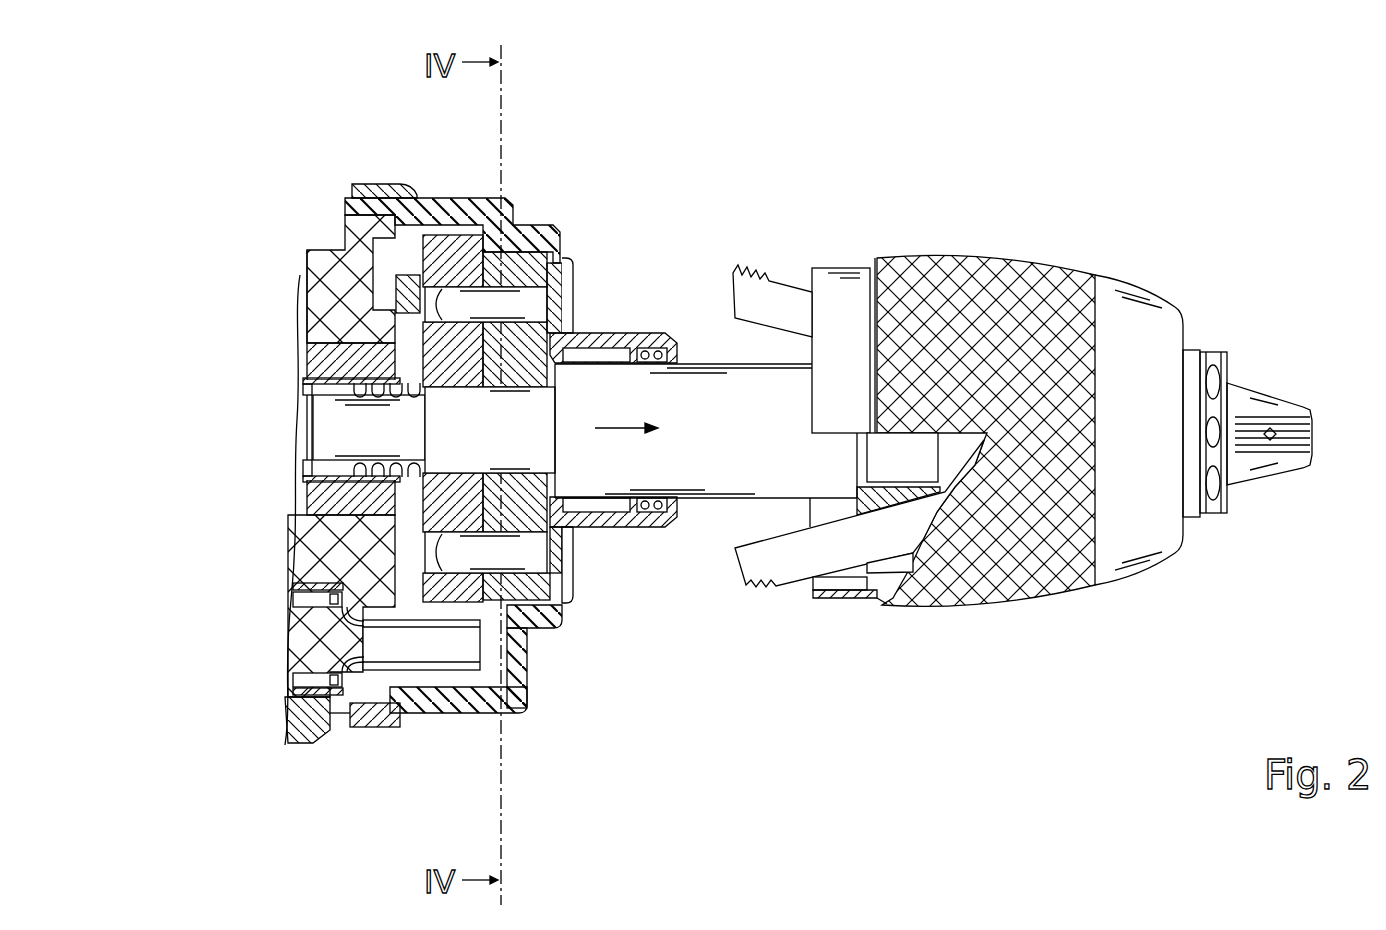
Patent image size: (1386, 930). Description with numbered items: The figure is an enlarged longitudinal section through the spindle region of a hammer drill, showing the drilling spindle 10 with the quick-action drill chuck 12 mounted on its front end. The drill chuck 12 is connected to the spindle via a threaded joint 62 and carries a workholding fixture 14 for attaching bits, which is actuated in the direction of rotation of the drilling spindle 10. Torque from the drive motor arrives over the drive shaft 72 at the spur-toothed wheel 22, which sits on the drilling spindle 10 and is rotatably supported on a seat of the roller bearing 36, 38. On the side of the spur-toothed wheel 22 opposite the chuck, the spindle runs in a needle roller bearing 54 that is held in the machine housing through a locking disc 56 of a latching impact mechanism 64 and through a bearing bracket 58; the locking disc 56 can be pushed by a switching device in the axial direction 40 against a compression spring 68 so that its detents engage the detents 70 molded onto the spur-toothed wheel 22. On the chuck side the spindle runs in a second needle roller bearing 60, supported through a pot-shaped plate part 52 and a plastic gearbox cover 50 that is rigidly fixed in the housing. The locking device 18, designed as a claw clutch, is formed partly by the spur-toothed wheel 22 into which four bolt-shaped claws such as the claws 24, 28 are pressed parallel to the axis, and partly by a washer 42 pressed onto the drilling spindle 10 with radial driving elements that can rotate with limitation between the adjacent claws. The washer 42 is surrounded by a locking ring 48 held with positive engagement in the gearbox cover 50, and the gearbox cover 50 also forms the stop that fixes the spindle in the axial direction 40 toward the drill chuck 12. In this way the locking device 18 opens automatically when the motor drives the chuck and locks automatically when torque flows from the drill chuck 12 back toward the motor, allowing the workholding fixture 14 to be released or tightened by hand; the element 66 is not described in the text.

The drilling spindle 10 is at (737, 425).
The quick-action drill chuck 12 is at (1000, 243).
The workholding fixture 14 is at (1255, 380).
The locking device 18 is at (488, 232).
The spur-toothed wheel 22 is at (453, 593).
The claw 24 is at (352, 188).
The claw 28 is at (528, 612).
The seat of the roller bearing 36 is at (567, 287).
The seat of the roller bearing 38 is at (562, 600).
The axial direction 40 is at (632, 432).
The washer 42 is at (578, 565).
The locking ring 48 is at (520, 267).
The gearbox cover 50 is at (420, 637).
The pot-shaped plate part 52 is at (640, 343).
The needle roller bearing 54 is at (333, 472).
The locking disc 56 is at (335, 497).
The bearing bracket 58 is at (332, 275).
The needle roller bearing 60 is at (607, 348).
The threaded joint 62 is at (985, 603).
The latching impact mechanism 64 is at (293, 680).
The ring 66 is at (395, 345).
The compression spring 68 is at (320, 384).
The detents 70 is at (292, 596).
The drive shaft 72 is at (373, 700).